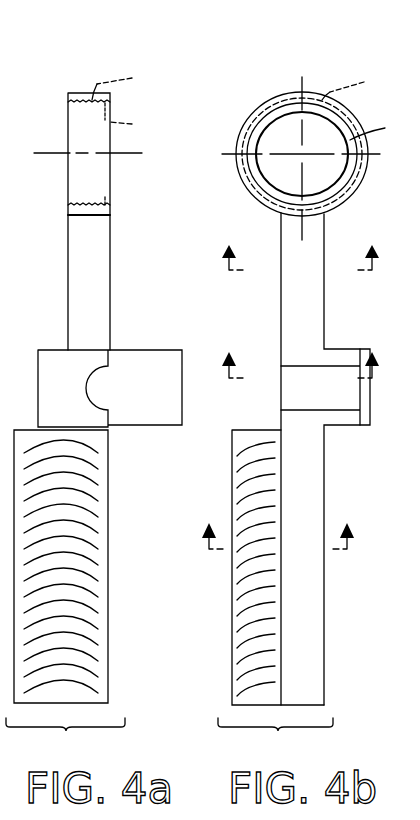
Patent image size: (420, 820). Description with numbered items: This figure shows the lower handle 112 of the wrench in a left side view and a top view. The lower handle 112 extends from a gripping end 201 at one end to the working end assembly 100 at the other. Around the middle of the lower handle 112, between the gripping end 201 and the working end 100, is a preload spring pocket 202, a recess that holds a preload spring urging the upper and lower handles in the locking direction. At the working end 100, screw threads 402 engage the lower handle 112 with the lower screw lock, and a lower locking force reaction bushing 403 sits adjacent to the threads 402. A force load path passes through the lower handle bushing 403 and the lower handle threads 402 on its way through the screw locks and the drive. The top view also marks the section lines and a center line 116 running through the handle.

In FIG. 4a, the working end assembly 100 is at (94, 401).
In FIG. 4b, the working end assembly 100 is at (294, 404).
In FIG. 4a, the lower handle 112 is at (70, 282).
In FIG. 4b, the lower handle 112 is at (232, 624).
In FIG. 4a, the center line / axis 116 is at (41, 152).
In FIG. 4a, the gripping end 201 is at (65, 600).
In FIG. 4b, the gripping end 201 is at (275, 601).
In FIG. 4a, the preload spring pocket 202 is at (88, 392).
In FIG. 4b, the preload spring pocket 202 is at (336, 392).
In FIG. 4a, the screw threads 402 is at (135, 83).
In FIG. 4b, the screw threads 402 is at (323, 143).
In FIG. 4a, the lower locking force reaction bushing 403 is at (142, 154).
In FIG. 4b, the lower locking force reaction bushing 403 is at (333, 154).